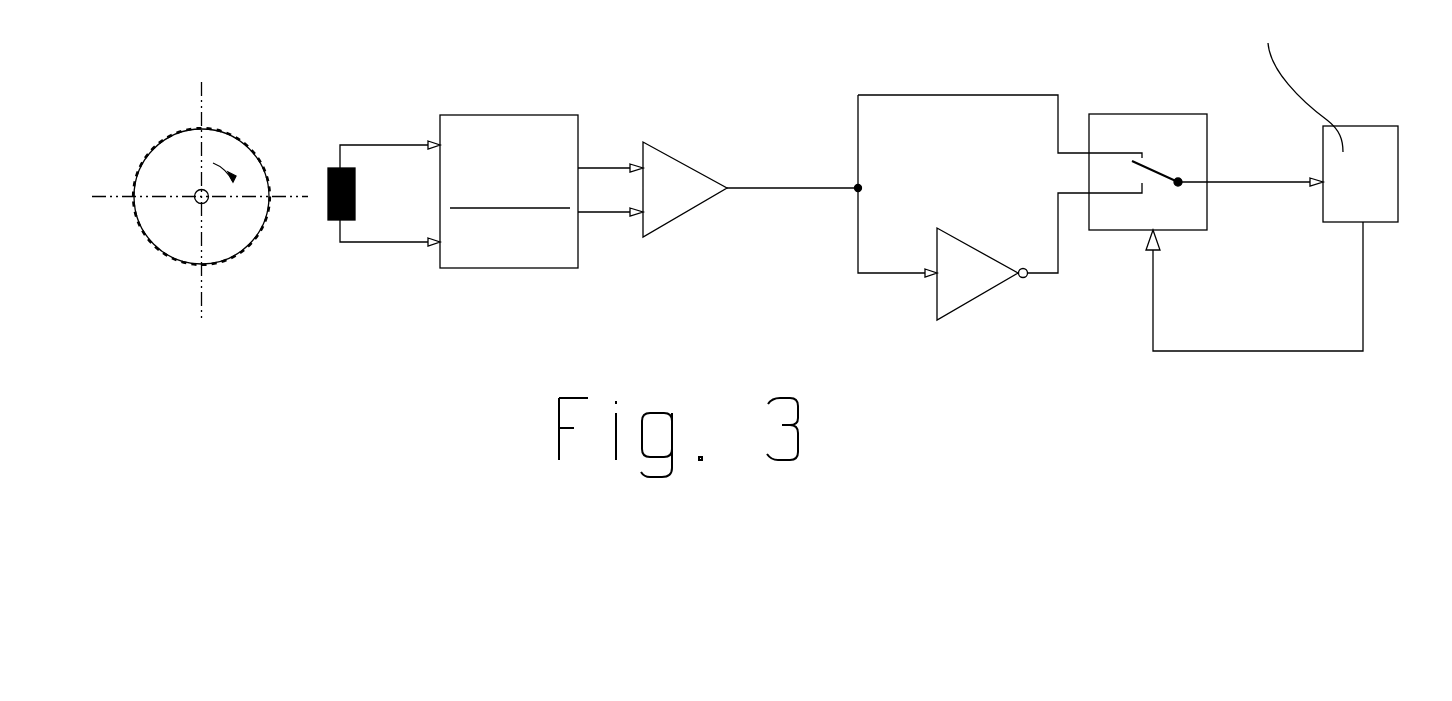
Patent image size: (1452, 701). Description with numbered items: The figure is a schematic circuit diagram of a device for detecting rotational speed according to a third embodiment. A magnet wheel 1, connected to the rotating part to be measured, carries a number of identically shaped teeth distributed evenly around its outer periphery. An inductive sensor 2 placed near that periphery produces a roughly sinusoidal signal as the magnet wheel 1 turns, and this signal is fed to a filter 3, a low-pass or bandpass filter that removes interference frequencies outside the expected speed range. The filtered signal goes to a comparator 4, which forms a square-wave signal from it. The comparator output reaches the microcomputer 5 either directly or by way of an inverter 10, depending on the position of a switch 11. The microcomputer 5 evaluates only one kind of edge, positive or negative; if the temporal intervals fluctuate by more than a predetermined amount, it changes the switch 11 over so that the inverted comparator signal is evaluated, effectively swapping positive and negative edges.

The magnet wheel 1 is at (242, 167).
The inductive sensor 2 is at (357, 187).
The filter 3 is at (514, 137).
The comparator 4 is at (678, 185).
The microcomputer 5 is at (1365, 147).
The inverter 10 is at (960, 293).
The switch 11 is at (1150, 133).